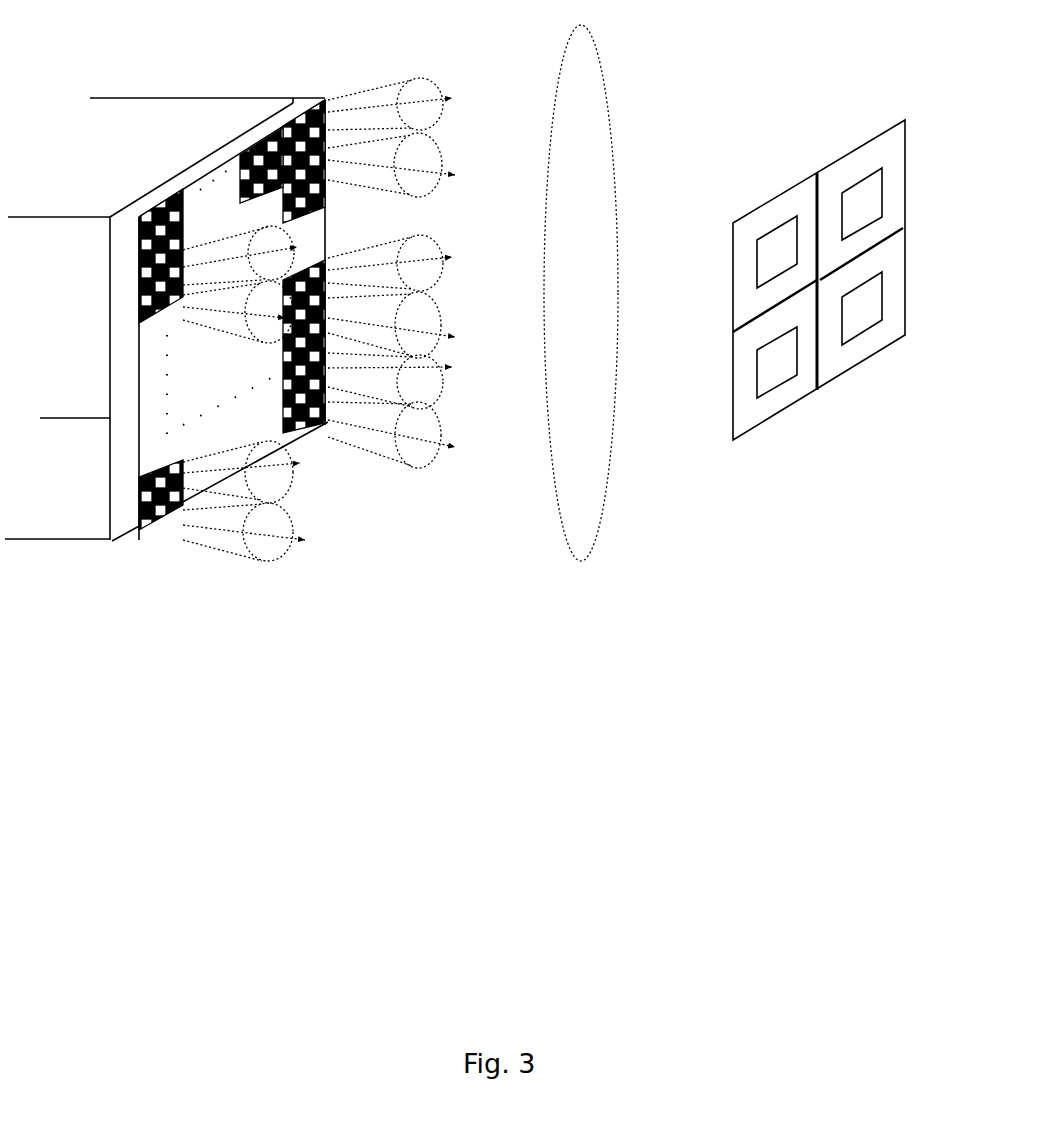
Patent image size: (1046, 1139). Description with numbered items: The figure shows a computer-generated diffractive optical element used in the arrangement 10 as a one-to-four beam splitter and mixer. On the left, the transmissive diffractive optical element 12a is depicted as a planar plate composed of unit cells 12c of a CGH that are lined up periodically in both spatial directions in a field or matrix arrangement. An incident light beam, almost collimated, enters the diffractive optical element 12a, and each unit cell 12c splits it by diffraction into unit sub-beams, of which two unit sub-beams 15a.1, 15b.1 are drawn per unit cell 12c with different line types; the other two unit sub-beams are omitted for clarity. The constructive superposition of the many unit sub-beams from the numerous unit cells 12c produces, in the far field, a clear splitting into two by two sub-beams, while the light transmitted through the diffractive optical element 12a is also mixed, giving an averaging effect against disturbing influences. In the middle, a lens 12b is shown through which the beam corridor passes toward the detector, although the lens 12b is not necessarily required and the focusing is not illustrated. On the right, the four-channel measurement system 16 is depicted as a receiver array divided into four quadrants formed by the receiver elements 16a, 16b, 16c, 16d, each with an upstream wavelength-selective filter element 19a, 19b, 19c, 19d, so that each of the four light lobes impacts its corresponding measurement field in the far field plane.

The arrangement 10 is at (278, 677).
The diffractive optical element 12a is at (113, 557).
The lens 12b is at (578, 572).
The unit cell 12c is at (157, 215).
The unit sub-beam 15a.1 is at (425, 82).
The unit sub-beam 15b.1 is at (432, 177).
The measurement system 16 is at (727, 395).
The receiver element 16a is at (874, 157).
The receiver element 16b is at (857, 352).
The receiver element 16c is at (762, 404).
The receiver element 16d is at (782, 209).
The filter element 19a is at (862, 188).
The filter element 19b is at (860, 308).
The filter element 19c is at (775, 358).
The filter element 19d is at (768, 243).